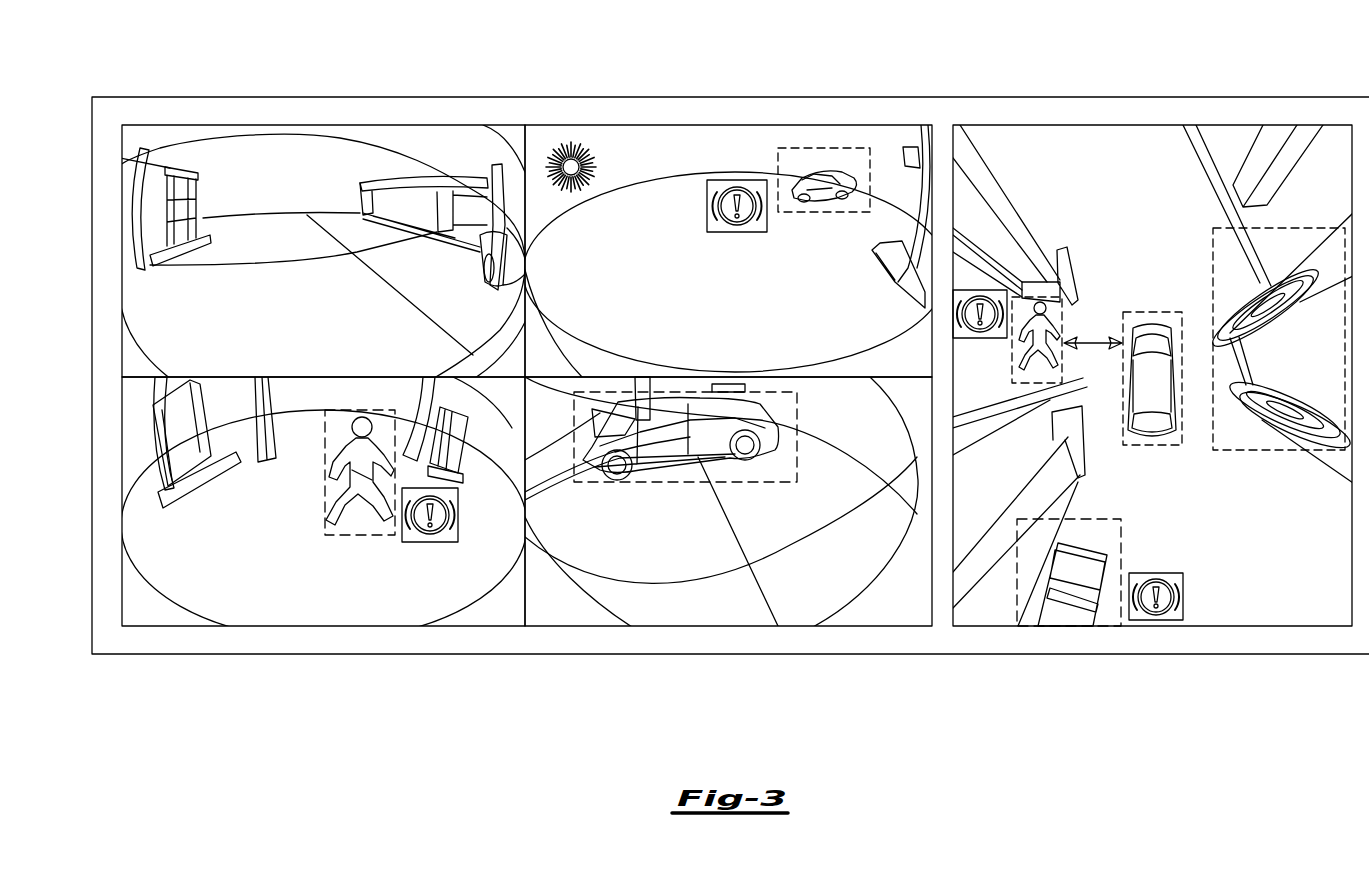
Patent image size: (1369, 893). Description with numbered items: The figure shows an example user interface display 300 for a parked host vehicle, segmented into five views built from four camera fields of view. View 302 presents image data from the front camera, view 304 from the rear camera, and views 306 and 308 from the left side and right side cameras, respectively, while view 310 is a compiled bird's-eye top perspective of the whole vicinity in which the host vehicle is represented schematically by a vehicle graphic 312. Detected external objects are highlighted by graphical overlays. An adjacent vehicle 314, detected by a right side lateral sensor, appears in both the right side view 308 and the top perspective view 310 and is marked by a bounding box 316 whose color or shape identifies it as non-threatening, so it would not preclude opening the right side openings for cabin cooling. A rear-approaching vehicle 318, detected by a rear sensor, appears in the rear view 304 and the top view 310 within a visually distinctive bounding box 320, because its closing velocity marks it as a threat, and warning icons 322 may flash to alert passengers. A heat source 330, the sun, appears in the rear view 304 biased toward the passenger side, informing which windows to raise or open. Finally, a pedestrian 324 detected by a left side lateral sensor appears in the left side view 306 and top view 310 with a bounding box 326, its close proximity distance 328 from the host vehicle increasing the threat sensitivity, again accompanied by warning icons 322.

The user interface display 300 is at (207, 97).
The front camera view 302 is at (420, 140).
The rear camera view 304 is at (733, 140).
The left side view 306 is at (421, 604).
The right side view 308 is at (733, 606).
The top perspective view 310 is at (1137, 140).
The vehicle graphic 312 is at (1152, 312).
The adjacent vehicle 314 is at (665, 470).
The bounding box 316 is at (797, 445).
The rear-approaching vehicle 318 is at (836, 196).
The bounding box 320 is at (820, 213).
The warning icon 322 is at (706, 205).
The pedestrian 324 is at (370, 520).
The bounding box 326 is at (322, 476).
The close proximity distance 328 is at (1094, 340).
The heat source 330 is at (570, 143).